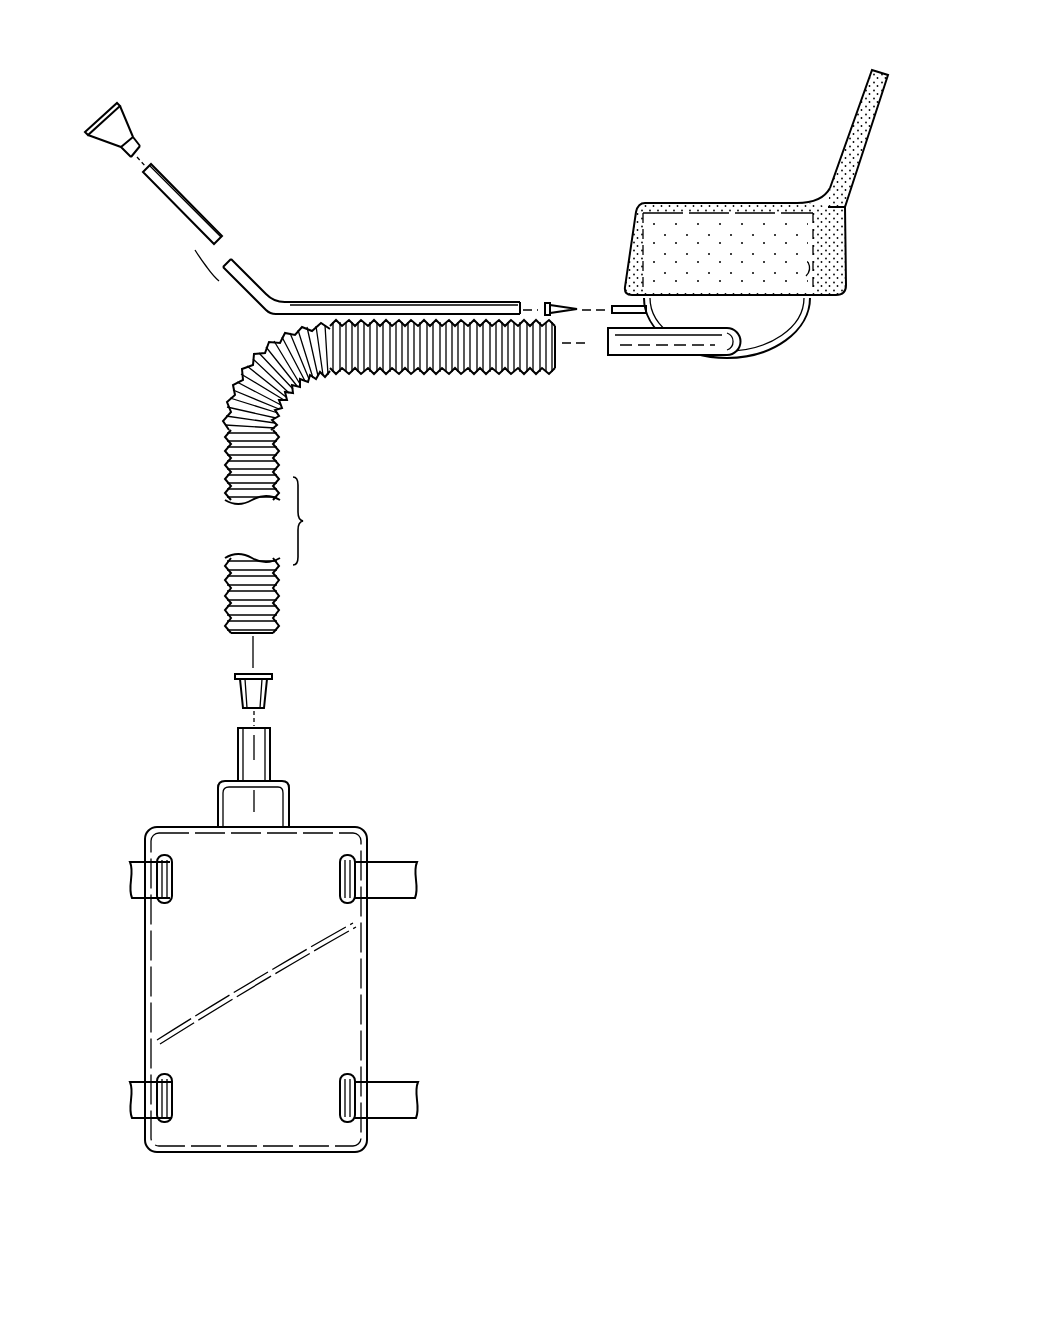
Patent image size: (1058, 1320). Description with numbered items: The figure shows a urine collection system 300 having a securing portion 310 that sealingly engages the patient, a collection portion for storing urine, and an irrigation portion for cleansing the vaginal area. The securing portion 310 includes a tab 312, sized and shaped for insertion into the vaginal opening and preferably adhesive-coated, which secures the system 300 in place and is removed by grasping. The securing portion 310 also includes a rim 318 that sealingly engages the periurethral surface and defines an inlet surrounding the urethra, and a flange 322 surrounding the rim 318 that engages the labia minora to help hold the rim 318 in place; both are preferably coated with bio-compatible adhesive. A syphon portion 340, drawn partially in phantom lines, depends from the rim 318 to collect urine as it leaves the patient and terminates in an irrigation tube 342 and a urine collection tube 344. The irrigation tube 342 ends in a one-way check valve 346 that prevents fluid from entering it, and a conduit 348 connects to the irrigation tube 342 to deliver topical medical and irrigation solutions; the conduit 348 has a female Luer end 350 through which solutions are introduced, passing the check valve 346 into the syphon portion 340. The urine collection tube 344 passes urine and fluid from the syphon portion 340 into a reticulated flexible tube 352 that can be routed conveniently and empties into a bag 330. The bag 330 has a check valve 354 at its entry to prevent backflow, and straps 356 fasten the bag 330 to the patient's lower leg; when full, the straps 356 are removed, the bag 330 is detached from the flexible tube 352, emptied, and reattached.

The urine collection system 300 is at (355, 104).
The securing portion 310 is at (843, 237).
The tab 312 is at (856, 118).
The rim 318 is at (676, 203).
The flange 322 is at (735, 240).
The bag 330 is at (347, 1008).
The syphon portion 340 is at (813, 268).
The irrigation tube 342 is at (618, 305).
The urine collection tube 344 is at (655, 342).
The one-way check valve 346 is at (546, 305).
The conduit 348 is at (198, 212).
The female Luer end 350 is at (121, 124).
The flexible tube 352 is at (308, 383).
The check valve 354 is at (238, 694).
The straps 356 is at (405, 878).